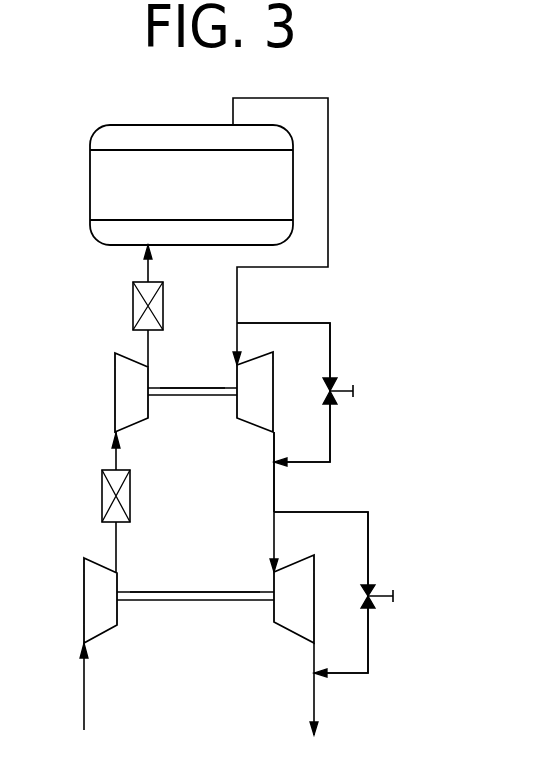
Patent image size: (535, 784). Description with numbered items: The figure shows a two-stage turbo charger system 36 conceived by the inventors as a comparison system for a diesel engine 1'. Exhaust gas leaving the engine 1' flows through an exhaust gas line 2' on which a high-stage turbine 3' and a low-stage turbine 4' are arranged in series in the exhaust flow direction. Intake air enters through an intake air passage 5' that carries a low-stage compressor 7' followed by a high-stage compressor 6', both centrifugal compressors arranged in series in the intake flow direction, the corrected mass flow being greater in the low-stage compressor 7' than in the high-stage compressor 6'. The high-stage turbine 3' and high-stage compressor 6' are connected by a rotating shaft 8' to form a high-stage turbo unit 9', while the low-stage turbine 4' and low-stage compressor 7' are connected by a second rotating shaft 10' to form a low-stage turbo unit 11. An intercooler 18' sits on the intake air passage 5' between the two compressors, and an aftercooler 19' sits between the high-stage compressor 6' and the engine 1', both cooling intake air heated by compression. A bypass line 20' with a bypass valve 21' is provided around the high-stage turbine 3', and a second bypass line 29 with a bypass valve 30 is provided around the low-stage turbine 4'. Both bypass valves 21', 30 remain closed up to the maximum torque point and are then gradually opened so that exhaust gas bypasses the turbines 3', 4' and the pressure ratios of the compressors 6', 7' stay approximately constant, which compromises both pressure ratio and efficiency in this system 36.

The diesel engine 1' is at (191, 185).
The exhaust gas line 2' is at (330, 472).
The high-stage turbine 3' is at (255, 392).
The low-stage turbine 4' is at (294, 599).
The intake air passage 5' is at (85, 488).
The high-stage compressor 6' is at (132, 392).
The low-stage compressor 7' is at (101, 600).
The rotating shaft 8' is at (192, 421).
The high-stage turbo unit 9' is at (192, 348).
The second rotating shaft 10' is at (195, 627).
The low-stage turbo unit 11 is at (181, 584).
The intercooler 18' is at (73, 492).
The aftercooler 19' is at (110, 312).
The bypass line 20' is at (324, 392).
The bypass valve 21' is at (367, 364).
The second bypass line 29 is at (368, 545).
The bypass valve 30 is at (373, 610).
The two-stage turbo charger system 36 is at (432, 377).